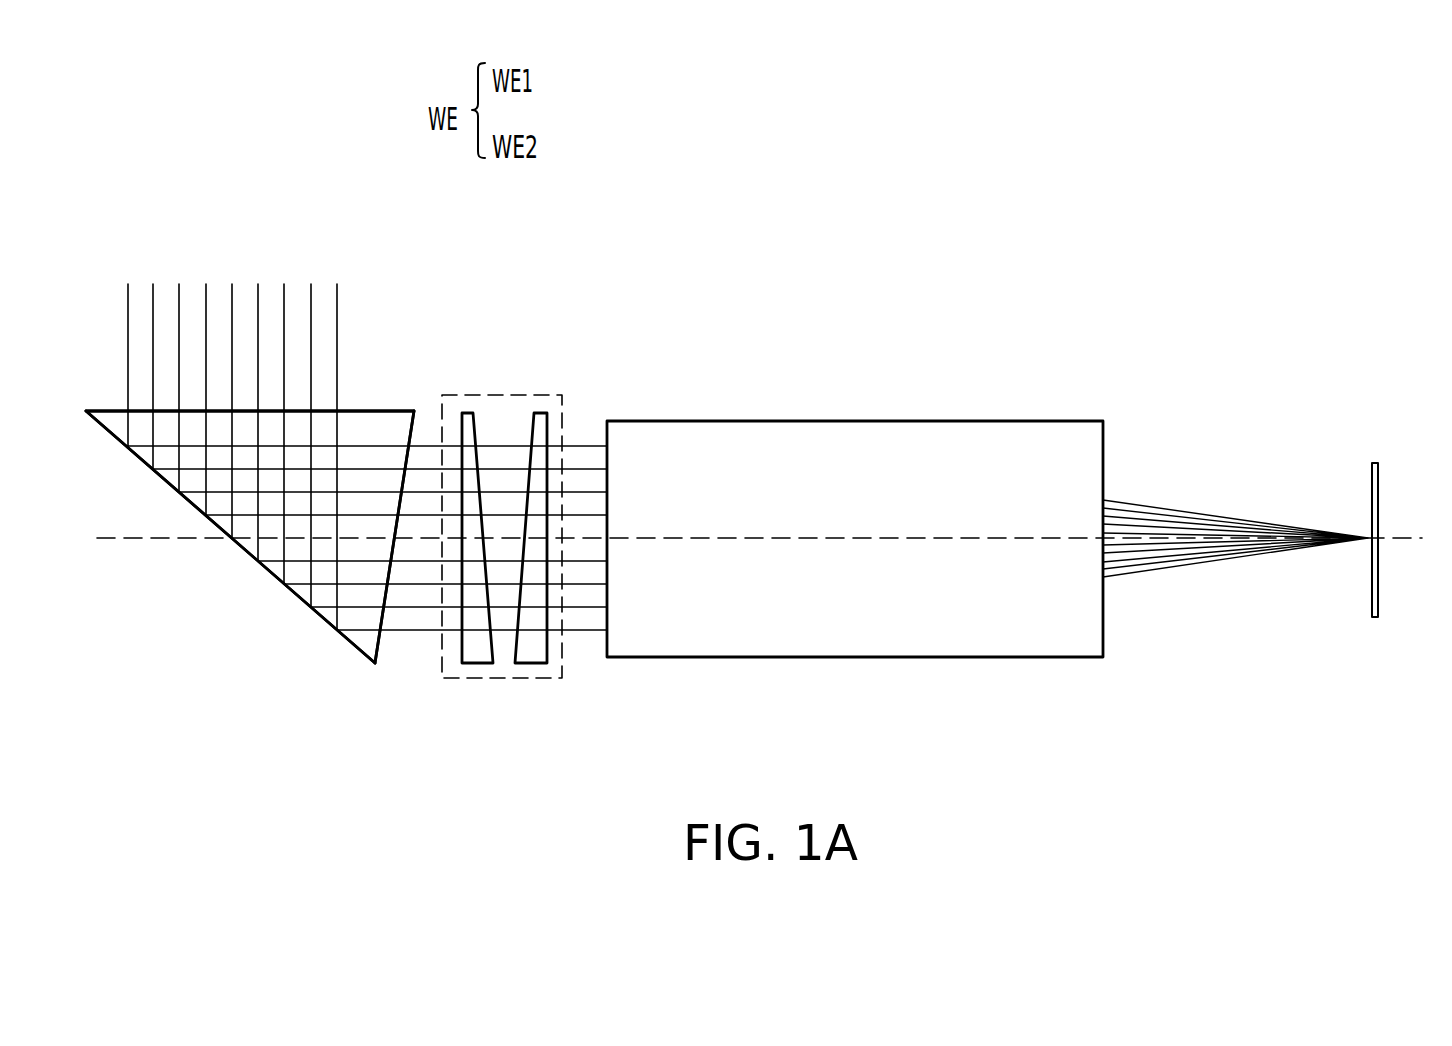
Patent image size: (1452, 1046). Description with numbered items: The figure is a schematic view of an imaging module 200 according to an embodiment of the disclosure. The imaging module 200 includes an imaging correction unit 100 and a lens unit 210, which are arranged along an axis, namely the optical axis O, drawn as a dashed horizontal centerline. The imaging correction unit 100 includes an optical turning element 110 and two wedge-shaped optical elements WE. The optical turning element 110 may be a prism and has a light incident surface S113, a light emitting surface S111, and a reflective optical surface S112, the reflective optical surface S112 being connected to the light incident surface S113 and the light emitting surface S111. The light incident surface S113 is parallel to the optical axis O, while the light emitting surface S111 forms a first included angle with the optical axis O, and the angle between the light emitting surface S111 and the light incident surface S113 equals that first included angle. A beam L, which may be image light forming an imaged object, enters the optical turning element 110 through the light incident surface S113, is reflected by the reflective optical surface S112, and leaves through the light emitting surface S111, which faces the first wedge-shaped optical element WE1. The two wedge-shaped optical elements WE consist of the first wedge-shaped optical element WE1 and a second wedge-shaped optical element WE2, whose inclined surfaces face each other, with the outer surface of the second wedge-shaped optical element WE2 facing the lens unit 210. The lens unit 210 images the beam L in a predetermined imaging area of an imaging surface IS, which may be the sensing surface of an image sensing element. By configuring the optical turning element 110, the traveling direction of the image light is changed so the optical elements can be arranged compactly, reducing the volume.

The imaging correction unit 100 is at (618, 297).
The optical turning element 110 is at (370, 643).
The light emitting surface S111 is at (383, 616).
The reflective optical surface S112 is at (280, 579).
The light incident surface S113 is at (377, 411).
The beam L is at (232, 310).
The two wedge-shaped optical elements WE is at (562, 408).
The first wedge-shaped optical element WE1 is at (470, 415).
The second wedge-shaped optical element WE2 is at (538, 415).
The lens unit 210 is at (867, 420).
The imaging module 200 is at (1427, 763).
The imaging surface IS is at (1371, 485).
The optical axis O is at (773, 541).